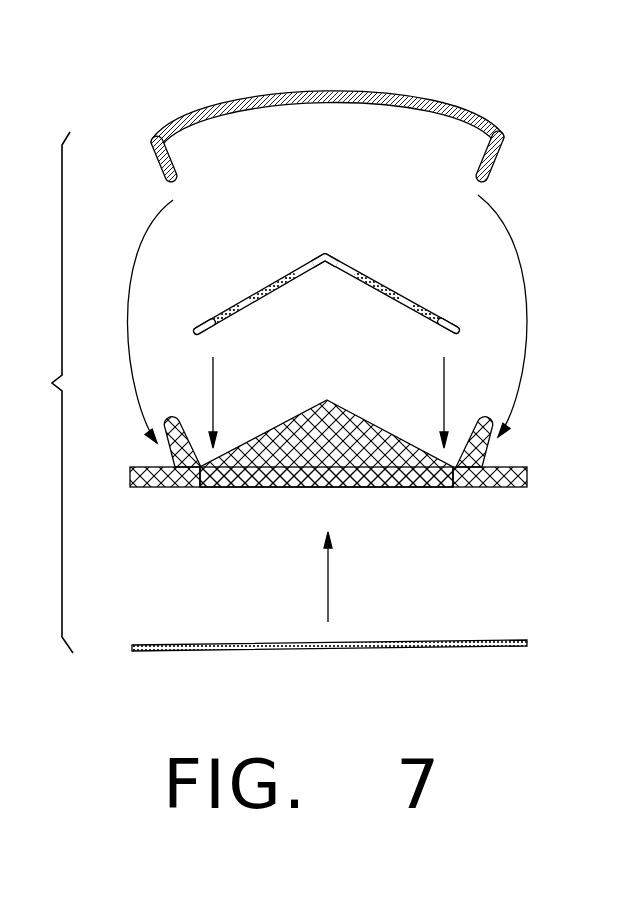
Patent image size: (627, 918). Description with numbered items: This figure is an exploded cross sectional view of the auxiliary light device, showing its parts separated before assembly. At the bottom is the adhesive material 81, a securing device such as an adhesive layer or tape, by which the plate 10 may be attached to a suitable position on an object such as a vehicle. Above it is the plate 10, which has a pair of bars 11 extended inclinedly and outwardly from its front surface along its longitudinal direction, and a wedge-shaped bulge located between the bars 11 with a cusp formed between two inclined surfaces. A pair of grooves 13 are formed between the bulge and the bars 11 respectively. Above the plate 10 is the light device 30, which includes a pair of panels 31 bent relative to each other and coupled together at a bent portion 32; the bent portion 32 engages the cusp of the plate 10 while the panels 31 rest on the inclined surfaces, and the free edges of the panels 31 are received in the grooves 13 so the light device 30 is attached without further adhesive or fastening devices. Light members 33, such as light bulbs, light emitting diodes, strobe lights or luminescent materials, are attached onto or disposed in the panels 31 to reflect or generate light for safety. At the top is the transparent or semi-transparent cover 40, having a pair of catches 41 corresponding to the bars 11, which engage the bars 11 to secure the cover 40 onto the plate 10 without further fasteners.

The plate 10 is at (490, 476).
The bars 11 is at (167, 462).
The grooves 13 is at (200, 487).
The light device 30 is at (348, 252).
The panels 31 is at (202, 327).
The bent portion 32 is at (325, 250).
The light members 33 is at (288, 276).
The cover 40 is at (477, 108).
The catches 41 is at (160, 172).
The adhesive material 81 is at (517, 646).